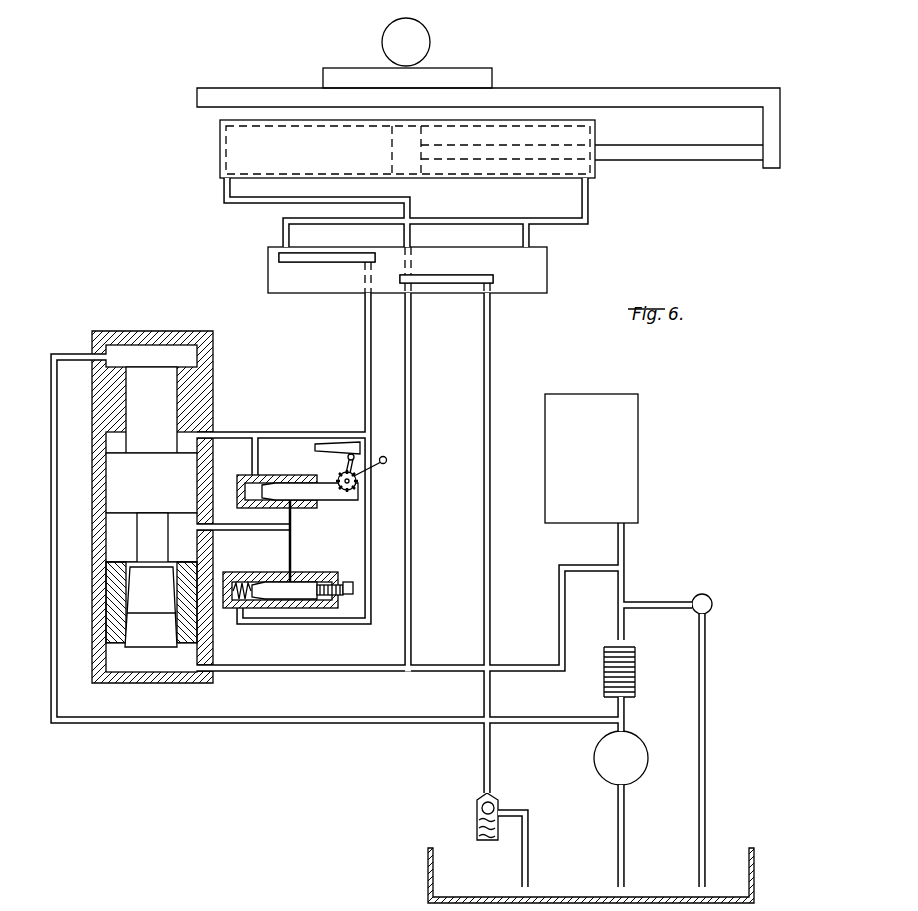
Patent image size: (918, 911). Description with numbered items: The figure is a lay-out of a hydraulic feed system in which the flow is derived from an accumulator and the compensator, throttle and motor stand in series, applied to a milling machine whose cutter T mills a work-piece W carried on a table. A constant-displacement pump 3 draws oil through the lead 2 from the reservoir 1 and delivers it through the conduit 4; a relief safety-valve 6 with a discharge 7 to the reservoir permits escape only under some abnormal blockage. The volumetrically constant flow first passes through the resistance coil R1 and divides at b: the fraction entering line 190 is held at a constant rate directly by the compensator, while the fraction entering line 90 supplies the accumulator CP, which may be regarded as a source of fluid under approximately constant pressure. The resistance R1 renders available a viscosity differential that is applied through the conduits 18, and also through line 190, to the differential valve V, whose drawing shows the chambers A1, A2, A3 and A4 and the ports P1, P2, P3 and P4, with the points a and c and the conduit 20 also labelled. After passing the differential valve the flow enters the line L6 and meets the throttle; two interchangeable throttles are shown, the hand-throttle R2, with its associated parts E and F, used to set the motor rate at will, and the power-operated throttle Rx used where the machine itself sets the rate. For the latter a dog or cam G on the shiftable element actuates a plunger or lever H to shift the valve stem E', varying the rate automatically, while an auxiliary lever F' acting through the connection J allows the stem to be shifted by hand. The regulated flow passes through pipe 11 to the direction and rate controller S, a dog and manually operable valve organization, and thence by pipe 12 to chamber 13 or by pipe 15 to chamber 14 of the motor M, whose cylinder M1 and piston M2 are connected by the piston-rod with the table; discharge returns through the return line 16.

The cutter T is at (429, 40).
The work-piece W is at (491, 70).
The motor M is at (212, 165).
The cylinder M1 is at (220, 128).
The chamber 14 is at (337, 150).
The piston M2 is at (392, 152).
The chamber 13 is at (527, 183).
The pipe 15 is at (222, 191).
The pipe 12 is at (590, 203).
The direction and rate controller S is at (268, 270).
The pipe 11 is at (365, 367).
The conduit 4 is at (412, 528).
The return line 16 is at (491, 473).
The conduit 20 is at (245, 436).
The pressure port P4 is at (223, 425).
The junction c is at (365, 436).
The pressure port P3 is at (243, 517).
The line L6 is at (247, 532).
The line 190 is at (330, 675).
The pressure port P2 is at (223, 690).
The division point b is at (617, 565).
The line 90 is at (626, 547).
The relief safety-valve 6 is at (713, 604).
The discharge 7 is at (707, 700).
The resistance coil R1 is at (637, 680).
The junction a is at (634, 721).
The conduit 18 is at (52, 530).
The pressure port P1 is at (76, 379).
The constant-displacement pump 3 is at (594, 761).
The lead 2 is at (624, 842).
The reservoir 1 is at (428, 868).
The chamber A1 is at (152, 507).
The piston A4 is at (124, 457).
The chamber A3 is at (130, 522).
The chamber A2 is at (160, 650).
The differential valve V is at (168, 602).
The valve stem E' is at (310, 492).
The power-operated throttle Rx is at (304, 541).
The dog or cam G is at (315, 450).
The plunger or lever H is at (346, 470).
The connection J is at (350, 492).
The auxiliary lever F' is at (372, 453).
The hand-throttle R2 is at (330, 559).
The slide piston E is at (284, 592).
The adjusting screw F is at (335, 575).
The accumulator CP is at (591, 458).